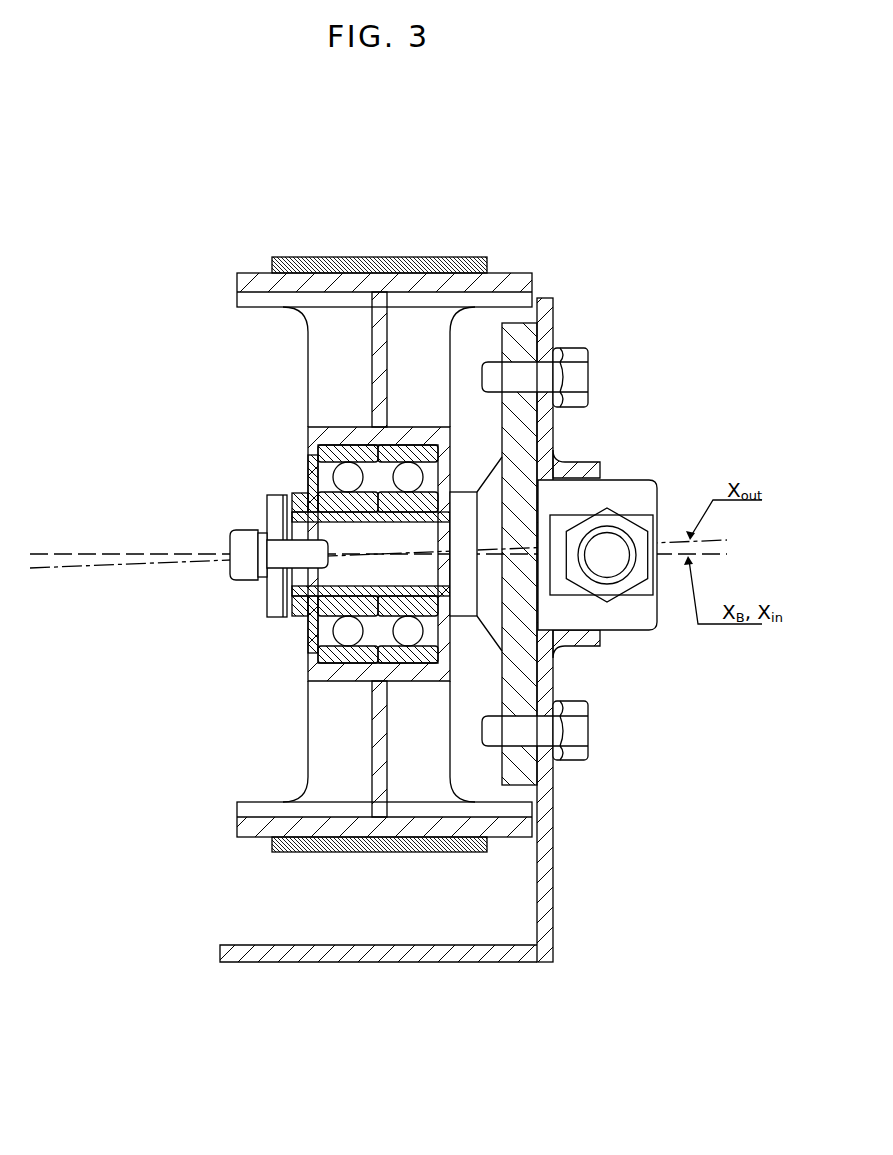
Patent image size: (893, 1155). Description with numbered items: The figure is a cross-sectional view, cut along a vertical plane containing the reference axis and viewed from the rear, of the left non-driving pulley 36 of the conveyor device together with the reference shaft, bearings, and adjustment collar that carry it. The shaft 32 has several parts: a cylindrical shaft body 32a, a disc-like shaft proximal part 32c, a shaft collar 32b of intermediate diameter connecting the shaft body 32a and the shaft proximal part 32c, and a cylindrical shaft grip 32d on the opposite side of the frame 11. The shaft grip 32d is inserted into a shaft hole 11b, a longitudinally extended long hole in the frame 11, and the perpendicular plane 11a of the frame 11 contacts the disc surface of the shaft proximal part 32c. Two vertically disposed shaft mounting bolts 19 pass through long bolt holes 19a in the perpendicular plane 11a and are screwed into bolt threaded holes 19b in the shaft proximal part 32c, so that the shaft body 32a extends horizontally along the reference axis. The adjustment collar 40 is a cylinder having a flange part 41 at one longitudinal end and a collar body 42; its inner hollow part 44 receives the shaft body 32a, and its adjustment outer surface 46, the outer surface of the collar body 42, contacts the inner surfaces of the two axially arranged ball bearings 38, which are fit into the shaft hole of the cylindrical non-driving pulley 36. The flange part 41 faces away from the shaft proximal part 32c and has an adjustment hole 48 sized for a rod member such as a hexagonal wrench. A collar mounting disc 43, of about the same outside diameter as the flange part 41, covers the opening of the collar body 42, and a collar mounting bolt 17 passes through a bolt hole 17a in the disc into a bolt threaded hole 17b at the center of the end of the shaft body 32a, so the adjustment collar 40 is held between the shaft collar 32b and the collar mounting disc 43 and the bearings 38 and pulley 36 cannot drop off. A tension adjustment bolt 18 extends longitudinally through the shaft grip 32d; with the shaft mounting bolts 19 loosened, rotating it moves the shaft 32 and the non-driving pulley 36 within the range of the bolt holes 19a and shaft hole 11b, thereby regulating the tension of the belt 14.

The frame 11 is at (486, 962).
The perpendicular plane 11a is at (555, 895).
The shaft hole 11b is at (587, 480).
The belt 14 is at (410, 257).
The collar mounting bolt 17 is at (228, 566).
The bolt hole 17a is at (263, 547).
The bolt threaded hole 17b is at (277, 548).
The tension adjustment bolt 18 is at (607, 592).
The shaft mounting bolt 19 is at (580, 380).
The bolt hole 19a is at (560, 360).
The bolt threaded hole 19b is at (518, 383).
The shaft 32 is at (636, 466).
The shaft body 32a is at (300, 582).
The shaft collar 32b is at (477, 620).
The shaft proximal part 32c is at (527, 787).
The shaft grip 32d is at (627, 633).
The non-driving pulley 36 is at (300, 788).
The bearings 38 is at (312, 448).
The adjustment collar 40 is at (302, 632).
The flange part 41 is at (293, 617).
The collar body 42 is at (392, 536).
The collar mounting disc 43 is at (283, 498).
The inner hollow part 44 is at (400, 590).
The adjustment outer surface 46 is at (372, 522).
The adjustment hole 48 is at (298, 512).